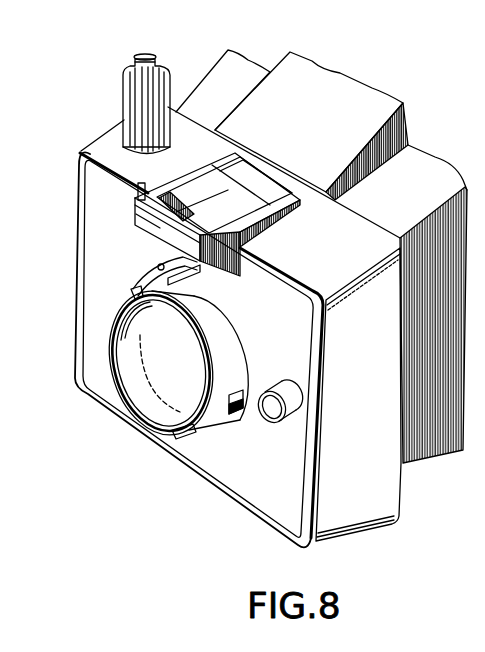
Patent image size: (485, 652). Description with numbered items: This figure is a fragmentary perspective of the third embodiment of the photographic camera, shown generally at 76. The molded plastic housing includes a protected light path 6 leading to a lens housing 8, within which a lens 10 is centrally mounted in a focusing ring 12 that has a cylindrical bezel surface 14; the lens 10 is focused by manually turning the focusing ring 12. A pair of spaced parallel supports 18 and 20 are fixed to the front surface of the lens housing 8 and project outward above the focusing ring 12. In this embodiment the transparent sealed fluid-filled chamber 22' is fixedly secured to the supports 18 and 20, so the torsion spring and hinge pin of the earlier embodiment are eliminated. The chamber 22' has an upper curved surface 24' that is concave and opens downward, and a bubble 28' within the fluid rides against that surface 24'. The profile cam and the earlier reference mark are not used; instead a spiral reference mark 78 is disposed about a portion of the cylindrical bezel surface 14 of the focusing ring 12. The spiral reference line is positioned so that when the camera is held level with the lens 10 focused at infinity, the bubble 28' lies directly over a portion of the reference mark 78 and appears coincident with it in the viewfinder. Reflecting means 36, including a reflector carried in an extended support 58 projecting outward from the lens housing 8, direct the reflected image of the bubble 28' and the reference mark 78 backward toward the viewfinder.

The protected light path 6 is at (441, 308).
The lens housing 8 is at (370, 358).
The lens 10 is at (190, 368).
The focusing ring 12 is at (176, 436).
The cylindrical bezel surface 14 is at (224, 430).
The support 18 is at (242, 240).
The support 20 is at (169, 226).
The chamber 22' is at (95, 307).
The curved surface 24' is at (144, 276).
The bubble 28' is at (131, 254).
The reflecting means 36 is at (134, 200).
The extended support 58 is at (143, 184).
The third embodiment 76 is at (403, 497).
The spiral reference mark 78 is at (208, 314).